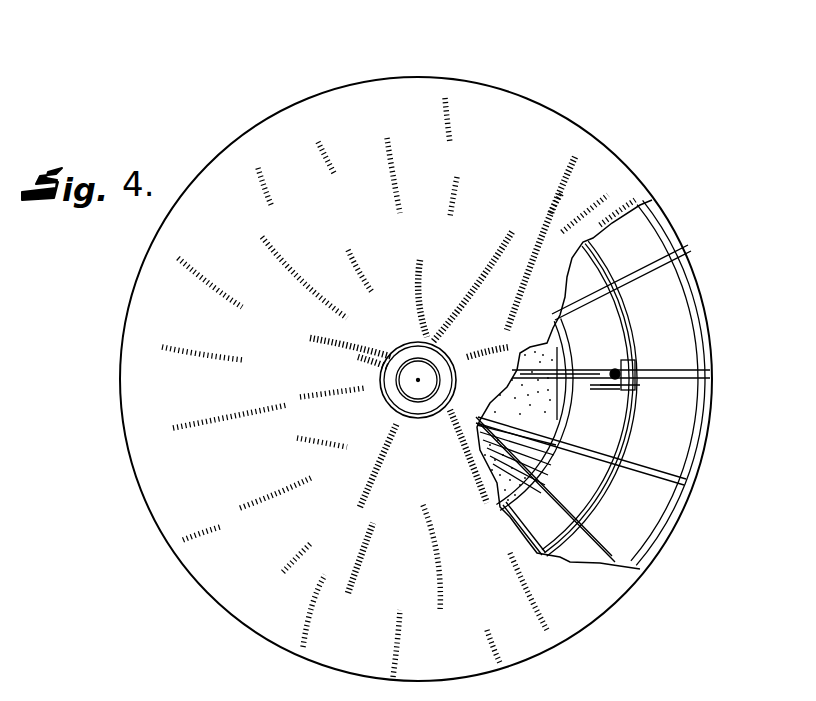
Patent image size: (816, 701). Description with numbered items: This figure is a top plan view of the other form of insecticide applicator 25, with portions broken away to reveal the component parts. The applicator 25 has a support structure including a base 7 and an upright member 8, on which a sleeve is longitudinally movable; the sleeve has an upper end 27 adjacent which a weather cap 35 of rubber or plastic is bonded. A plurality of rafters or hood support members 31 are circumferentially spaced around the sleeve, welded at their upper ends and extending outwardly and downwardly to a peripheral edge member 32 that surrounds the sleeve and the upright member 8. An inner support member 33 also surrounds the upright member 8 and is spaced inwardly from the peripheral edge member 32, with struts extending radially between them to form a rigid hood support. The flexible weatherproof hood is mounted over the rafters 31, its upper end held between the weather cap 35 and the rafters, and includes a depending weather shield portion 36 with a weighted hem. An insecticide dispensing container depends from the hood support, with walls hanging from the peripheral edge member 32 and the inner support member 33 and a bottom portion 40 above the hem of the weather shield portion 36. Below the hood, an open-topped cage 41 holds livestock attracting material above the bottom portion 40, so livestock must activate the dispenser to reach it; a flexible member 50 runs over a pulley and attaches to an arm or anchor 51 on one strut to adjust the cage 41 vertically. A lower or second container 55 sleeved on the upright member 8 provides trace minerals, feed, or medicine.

The insecticide applicator 25 is at (514, 71).
The weather shield portion 36 is at (126, 318).
The peripheral edge member 32 is at (700, 316).
The bottom portion 40 is at (667, 302).
The lower or second container 55 is at (570, 336).
The rafters or hood support members 31 is at (664, 262).
The inner support member 33 is at (563, 532).
The cage 41 is at (531, 476).
The flexible member 50 is at (617, 370).
The arm or anchor 51 is at (623, 390).
The base 7 is at (598, 396).
The upper end 27 is at (400, 375).
The weather cap 35 is at (392, 397).
The upright member 8 is at (412, 392).